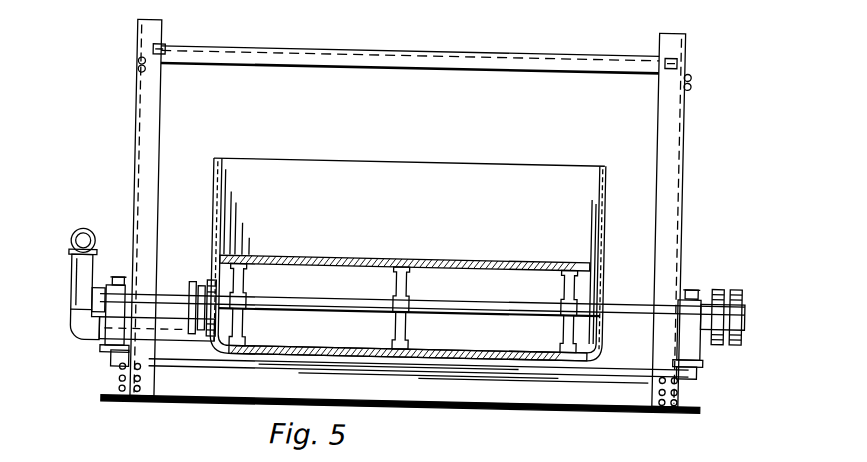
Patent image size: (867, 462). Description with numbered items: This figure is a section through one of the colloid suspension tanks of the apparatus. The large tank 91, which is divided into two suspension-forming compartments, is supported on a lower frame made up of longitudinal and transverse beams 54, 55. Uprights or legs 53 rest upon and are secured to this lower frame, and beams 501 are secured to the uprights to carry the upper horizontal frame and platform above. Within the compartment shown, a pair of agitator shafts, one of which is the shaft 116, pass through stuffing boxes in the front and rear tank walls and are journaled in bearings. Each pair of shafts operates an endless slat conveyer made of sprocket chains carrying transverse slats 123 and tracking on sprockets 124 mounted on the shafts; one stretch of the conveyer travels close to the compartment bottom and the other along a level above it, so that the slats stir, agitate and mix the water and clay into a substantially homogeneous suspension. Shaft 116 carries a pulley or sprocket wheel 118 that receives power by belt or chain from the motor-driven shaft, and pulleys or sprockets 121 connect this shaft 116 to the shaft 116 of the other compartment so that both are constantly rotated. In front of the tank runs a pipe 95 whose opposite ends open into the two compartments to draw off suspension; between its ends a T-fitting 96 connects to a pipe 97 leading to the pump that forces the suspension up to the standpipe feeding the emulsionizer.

The uprights or legs 53 is at (150, 136).
The beams 501 is at (402, 64).
The tank 91 is at (604, 174).
The transverse slats 123 is at (526, 265).
The sprockets 124 is at (248, 289).
The shaft 116 is at (322, 312).
The pulley or sprocket wheel 118 is at (718, 283).
The pulleys or sprockets 121 is at (735, 283).
The pipe 97 is at (79, 277).
The T-fitting 96 is at (70, 325).
The pipe 95 is at (179, 345).
The longitudinal beams 54 is at (123, 384).
The transverse beams 55 is at (514, 390).